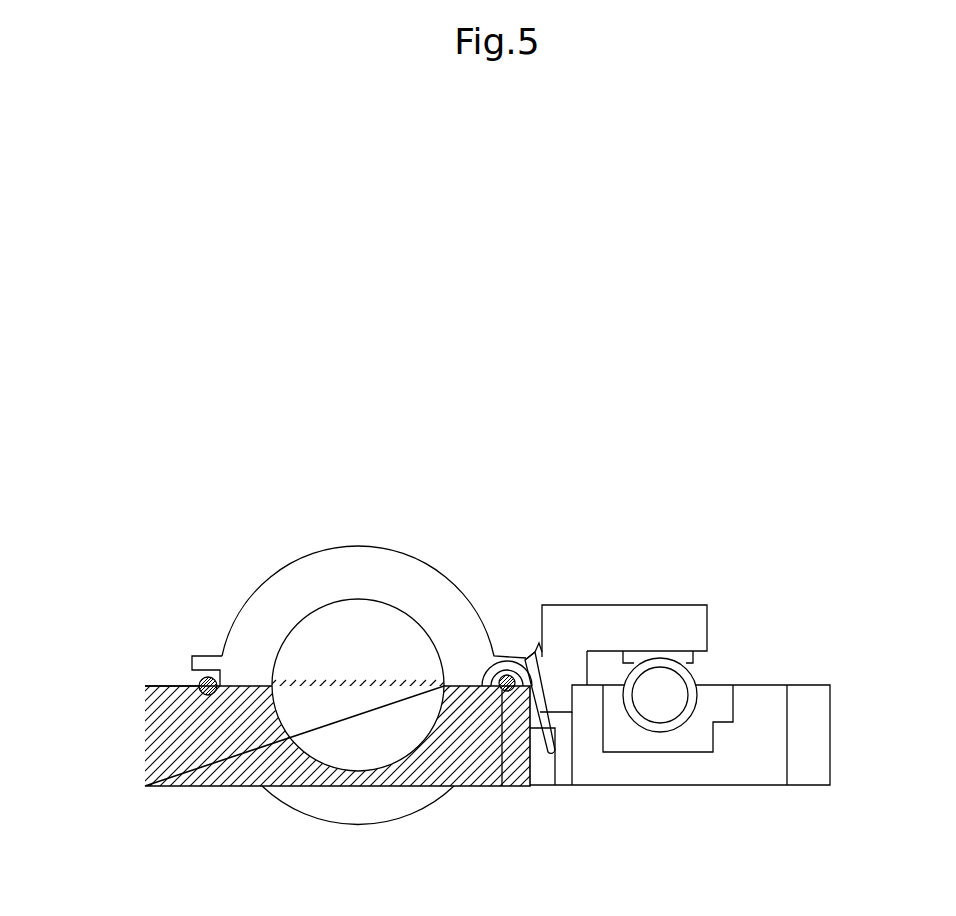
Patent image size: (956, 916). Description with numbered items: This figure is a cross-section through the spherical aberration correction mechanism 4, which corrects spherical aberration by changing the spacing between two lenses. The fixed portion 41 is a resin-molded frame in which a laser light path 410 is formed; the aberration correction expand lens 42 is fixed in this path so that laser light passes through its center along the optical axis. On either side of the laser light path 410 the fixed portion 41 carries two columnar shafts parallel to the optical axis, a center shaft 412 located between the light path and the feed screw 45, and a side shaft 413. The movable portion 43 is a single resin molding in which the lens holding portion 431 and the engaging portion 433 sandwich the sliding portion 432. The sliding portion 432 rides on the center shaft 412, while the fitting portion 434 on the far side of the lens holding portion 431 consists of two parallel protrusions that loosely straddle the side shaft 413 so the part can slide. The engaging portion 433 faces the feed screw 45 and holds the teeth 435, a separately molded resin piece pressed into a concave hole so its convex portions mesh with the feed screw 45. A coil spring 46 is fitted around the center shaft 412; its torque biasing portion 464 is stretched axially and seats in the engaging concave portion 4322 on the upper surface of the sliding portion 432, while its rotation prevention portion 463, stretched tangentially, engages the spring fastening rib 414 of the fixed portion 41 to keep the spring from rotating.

The spherical aberration correction mechanism 4 is at (95, 453).
The fixed portion 41 is at (166, 774).
The laser light path 410 is at (266, 788).
The center shaft 412 is at (500, 786).
The side shaft 413 is at (146, 688).
The spring fastening rib 414 is at (563, 760).
The aberration correction expand lens 42 is at (362, 730).
The movable portion 43 is at (349, 552).
The lens holding portion 431 is at (268, 593).
The sliding portion 432 is at (538, 680).
The engaging concave portion 4322 is at (537, 655).
The engaging portion 433 is at (682, 614).
The fitting portion 434 is at (198, 651).
The teeth 435 is at (700, 656).
The feed screw 45 is at (672, 692).
The coil spring 46 is at (502, 655).
The rotation prevention portion 463 is at (550, 757).
The torque biasing portion 464 is at (538, 657).